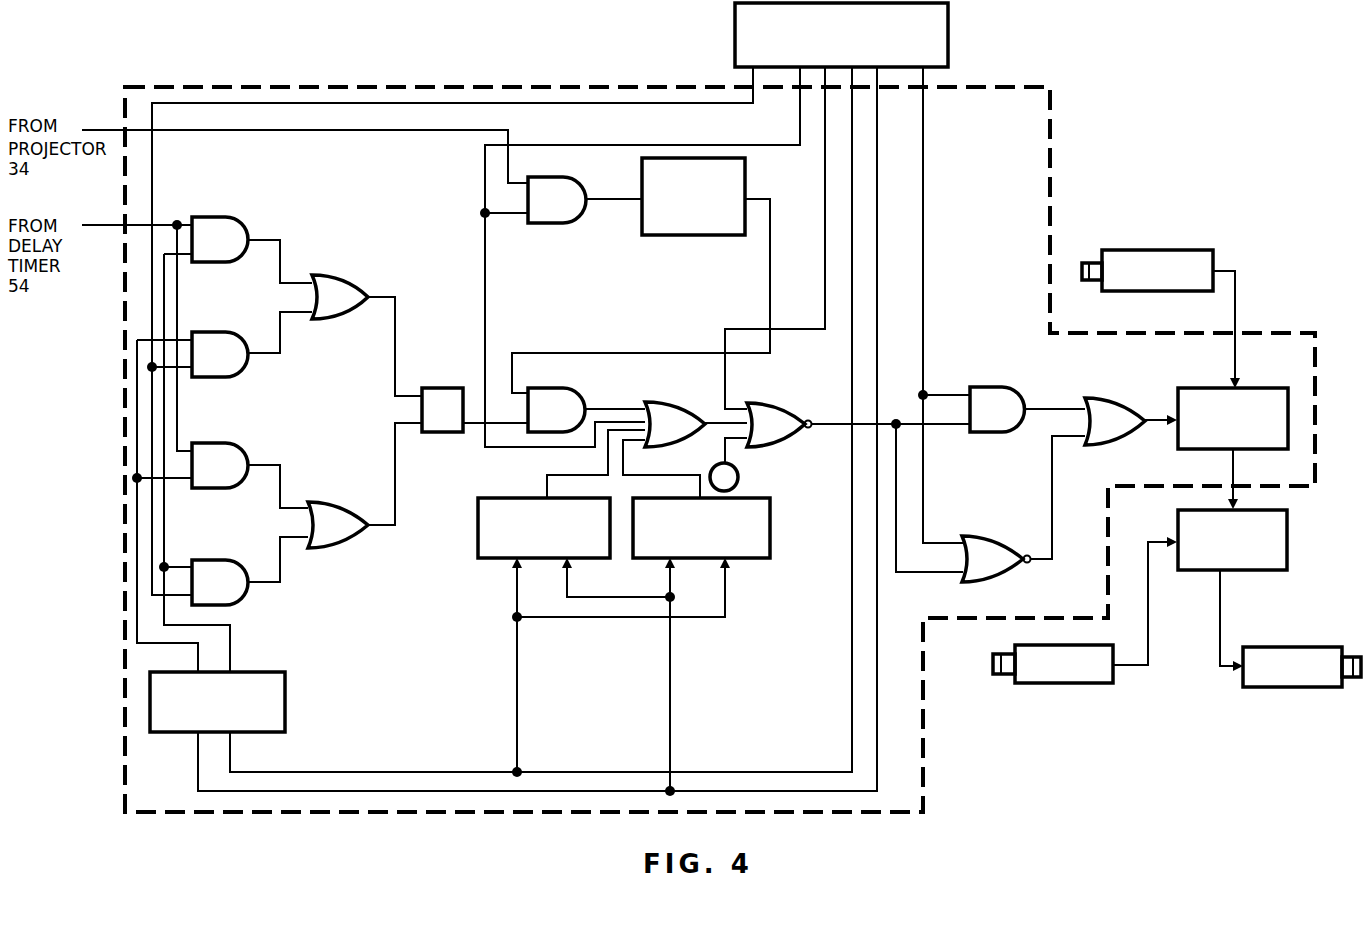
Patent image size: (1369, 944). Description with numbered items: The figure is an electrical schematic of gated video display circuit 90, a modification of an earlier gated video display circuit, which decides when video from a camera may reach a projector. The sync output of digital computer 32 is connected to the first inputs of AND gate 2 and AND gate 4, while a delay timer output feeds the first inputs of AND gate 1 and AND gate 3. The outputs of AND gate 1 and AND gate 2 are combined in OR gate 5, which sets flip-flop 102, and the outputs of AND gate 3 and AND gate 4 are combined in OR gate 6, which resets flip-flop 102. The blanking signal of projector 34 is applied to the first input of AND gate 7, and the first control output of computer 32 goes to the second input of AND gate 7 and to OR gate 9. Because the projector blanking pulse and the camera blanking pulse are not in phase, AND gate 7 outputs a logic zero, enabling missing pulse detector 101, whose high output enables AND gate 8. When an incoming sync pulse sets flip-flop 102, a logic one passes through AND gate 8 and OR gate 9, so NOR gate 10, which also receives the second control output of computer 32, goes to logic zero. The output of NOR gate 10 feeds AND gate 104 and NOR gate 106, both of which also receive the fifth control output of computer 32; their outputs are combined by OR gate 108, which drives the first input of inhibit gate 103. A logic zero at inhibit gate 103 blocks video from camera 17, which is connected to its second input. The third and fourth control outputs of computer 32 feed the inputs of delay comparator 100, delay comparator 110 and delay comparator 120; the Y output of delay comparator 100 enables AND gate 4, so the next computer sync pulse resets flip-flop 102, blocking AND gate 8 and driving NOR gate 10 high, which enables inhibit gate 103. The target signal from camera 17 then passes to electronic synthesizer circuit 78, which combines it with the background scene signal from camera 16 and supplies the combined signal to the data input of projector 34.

The AND gate 1 is at (229, 217).
The AND gate 2 is at (229, 332).
The AND gate 3 is at (229, 443).
The AND gate 4 is at (229, 560).
The OR gate 5 is at (360, 276).
The OR gate 6 is at (358, 503).
The AND gate 7 is at (546, 228).
The AND gate 8 is at (575, 385).
The OR gate 9 is at (685, 400).
The NOR gate 10 is at (795, 400).
The camera 16 is at (1033, 685).
The camera 17 is at (1143, 250).
The digital computer 32 is at (948, 28).
The projector 34 is at (1258, 688).
The electronic synthesizer circuit 78 is at (1243, 572).
The gated video display circuit 90 is at (923, 775).
The delay comparator 100 is at (287, 683).
The missing pulse detector 101 is at (658, 236).
The flip-flop 102 is at (456, 387).
The inhibit gate 103 is at (1268, 387).
The AND gate 104 is at (1004, 386).
The NOR gate 106 is at (1002, 534).
The OR gate 108 is at (1125, 398).
The delay comparator 110 is at (477, 515).
The delay comparator 120 is at (771, 515).